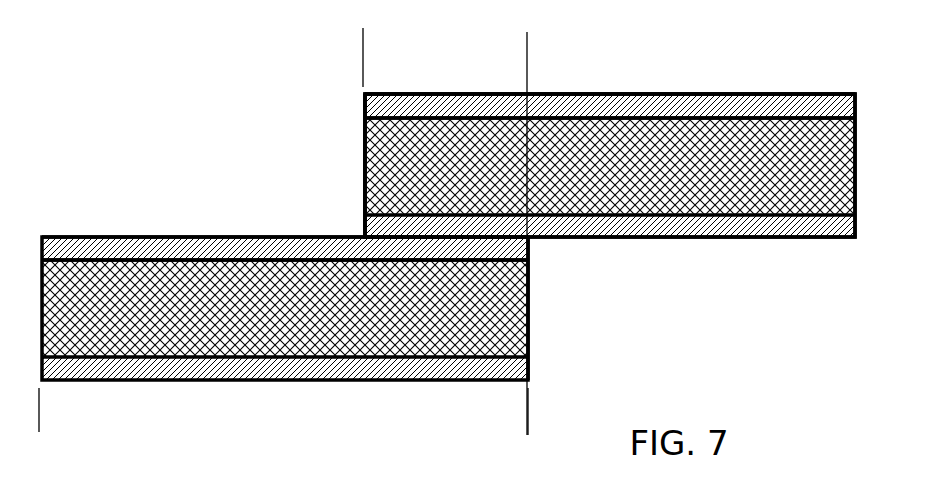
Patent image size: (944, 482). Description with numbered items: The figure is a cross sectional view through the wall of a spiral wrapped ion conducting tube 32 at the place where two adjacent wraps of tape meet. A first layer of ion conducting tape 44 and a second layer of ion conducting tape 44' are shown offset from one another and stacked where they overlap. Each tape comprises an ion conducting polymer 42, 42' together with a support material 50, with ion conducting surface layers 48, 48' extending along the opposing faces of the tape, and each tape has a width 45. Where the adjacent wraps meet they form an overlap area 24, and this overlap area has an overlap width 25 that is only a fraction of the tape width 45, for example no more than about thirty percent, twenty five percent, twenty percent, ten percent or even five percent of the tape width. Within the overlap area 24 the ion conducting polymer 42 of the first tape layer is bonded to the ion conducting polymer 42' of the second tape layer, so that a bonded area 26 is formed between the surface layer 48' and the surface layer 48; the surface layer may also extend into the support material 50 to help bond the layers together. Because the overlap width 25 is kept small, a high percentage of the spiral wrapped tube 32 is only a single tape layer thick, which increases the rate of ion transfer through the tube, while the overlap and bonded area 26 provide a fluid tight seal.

The spiral wrapped ion conducting tube 32 is at (742, 84).
The overlap area 24 is at (365, 190).
The bonded area 26 is at (505, 232).
The ion conducting polymer 42 is at (312, 165).
The ion conducting polymer of second layer 42' is at (575, 308).
The ion conducting tape 44 is at (610, 59).
The second layer of ion conducting tape 44' is at (285, 198).
The surface layer 48 is at (610, 66).
The surface layer 48' is at (448, 241).
The support material 50 is at (667, 190).
The overlap width 25 is at (527, 52).
The width 45 is at (528, 427).